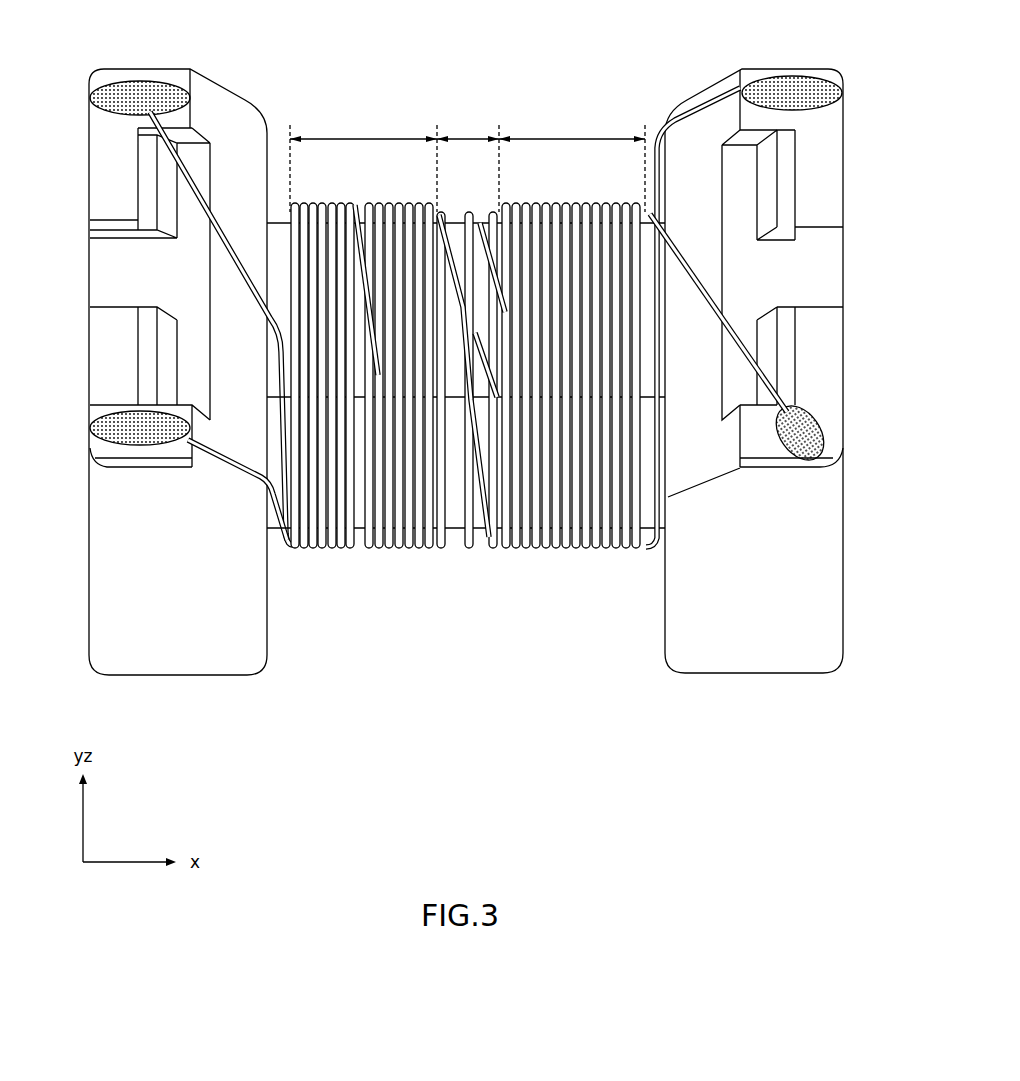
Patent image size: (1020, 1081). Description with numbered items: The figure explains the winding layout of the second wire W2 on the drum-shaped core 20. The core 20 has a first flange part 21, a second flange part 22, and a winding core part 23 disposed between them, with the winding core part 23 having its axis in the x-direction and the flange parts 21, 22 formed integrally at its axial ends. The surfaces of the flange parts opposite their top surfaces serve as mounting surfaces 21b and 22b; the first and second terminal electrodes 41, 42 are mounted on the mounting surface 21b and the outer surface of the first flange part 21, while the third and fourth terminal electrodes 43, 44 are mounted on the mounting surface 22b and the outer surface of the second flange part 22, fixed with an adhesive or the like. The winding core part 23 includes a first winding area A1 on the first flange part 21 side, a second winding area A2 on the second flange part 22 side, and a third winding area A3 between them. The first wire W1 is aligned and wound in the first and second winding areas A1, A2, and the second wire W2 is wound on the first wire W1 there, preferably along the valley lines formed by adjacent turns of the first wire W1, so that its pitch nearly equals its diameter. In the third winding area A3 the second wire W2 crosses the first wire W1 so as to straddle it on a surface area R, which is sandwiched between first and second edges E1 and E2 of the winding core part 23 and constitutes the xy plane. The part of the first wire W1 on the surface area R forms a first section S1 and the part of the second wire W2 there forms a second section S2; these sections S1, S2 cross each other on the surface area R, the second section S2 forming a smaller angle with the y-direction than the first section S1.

The drum-shaped core 20 is at (466, 376).
The first flange part 21 is at (832, 594).
The mounting surface 21b is at (832, 261).
The second flange part 22 is at (102, 594).
The mounting surface 22b is at (112, 276).
The winding core part 23 is at (465, 520).
The first terminal electrode 41 is at (832, 363).
The second terminal electrode 42 is at (832, 148).
The third terminal electrode 43 is at (102, 363).
The fourth terminal electrode 44 is at (102, 148).
The first wire W1 is at (723, 297).
The second wire W2 is at (702, 98).
The first section S1 is at (453, 265).
The second section S2 is at (472, 326).
The first edge E1 is at (462, 397).
The second edge E2 is at (470, 212).
The surface area R is at (470, 323).
The first winding area A1 is at (572, 328).
The second winding area A2 is at (363, 328).
The third winding area A3 is at (468, 328).